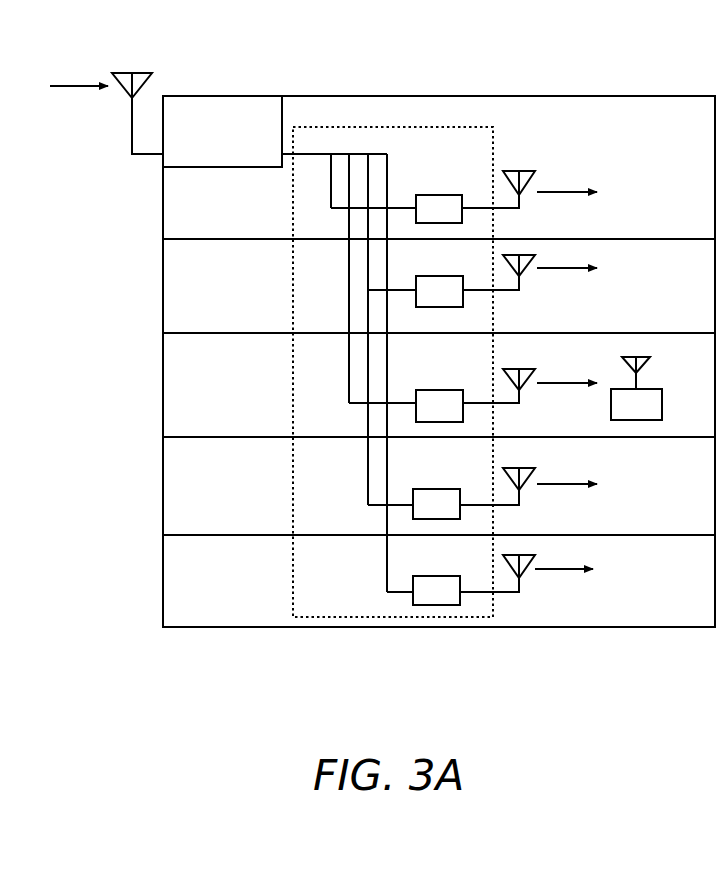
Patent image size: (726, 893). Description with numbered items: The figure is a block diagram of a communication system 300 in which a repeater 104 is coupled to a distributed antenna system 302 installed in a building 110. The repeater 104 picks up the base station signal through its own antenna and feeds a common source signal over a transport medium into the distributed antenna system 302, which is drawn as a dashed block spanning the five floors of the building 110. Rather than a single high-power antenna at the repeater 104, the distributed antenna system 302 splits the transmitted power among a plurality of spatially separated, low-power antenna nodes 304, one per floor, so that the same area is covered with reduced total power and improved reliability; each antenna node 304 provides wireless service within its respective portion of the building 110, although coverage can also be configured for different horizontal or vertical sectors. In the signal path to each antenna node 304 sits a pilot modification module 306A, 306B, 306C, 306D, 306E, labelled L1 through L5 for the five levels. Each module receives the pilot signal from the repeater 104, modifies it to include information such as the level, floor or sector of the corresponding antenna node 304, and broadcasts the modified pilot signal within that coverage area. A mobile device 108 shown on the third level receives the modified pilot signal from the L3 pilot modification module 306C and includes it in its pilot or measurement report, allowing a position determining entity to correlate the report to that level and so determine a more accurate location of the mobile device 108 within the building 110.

The communication system 300 is at (228, 29).
The repeater 104 is at (200, 160).
The building 110 is at (691, 125).
The distributed antenna system 302 is at (362, 127).
The pilot modification module 306A is at (426, 577).
The pilot modification module 306B is at (424, 490).
The pilot modification module 306C is at (424, 391).
The pilot modification module 306D is at (425, 276).
The pilot modification module 306E is at (424, 192).
The antenna node 304 is at (529, 184).
The mobile device 108 is at (655, 416).